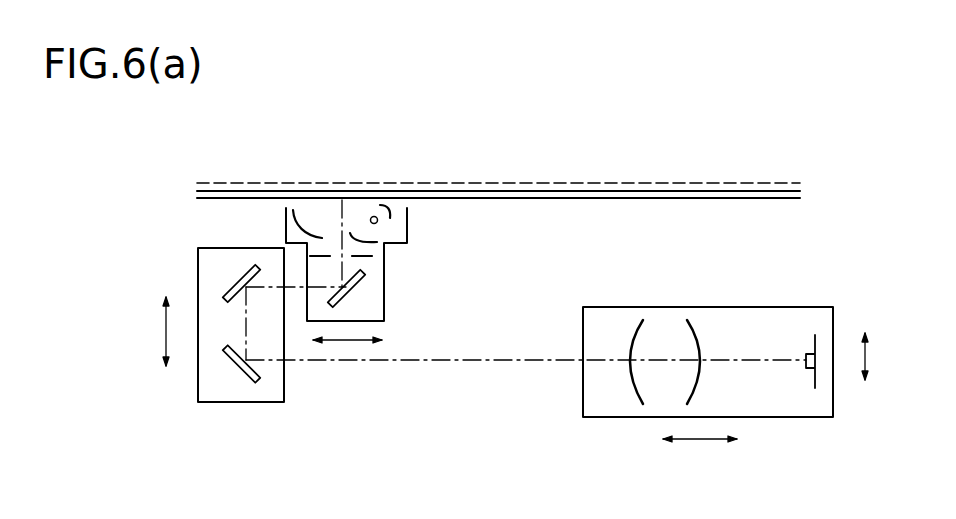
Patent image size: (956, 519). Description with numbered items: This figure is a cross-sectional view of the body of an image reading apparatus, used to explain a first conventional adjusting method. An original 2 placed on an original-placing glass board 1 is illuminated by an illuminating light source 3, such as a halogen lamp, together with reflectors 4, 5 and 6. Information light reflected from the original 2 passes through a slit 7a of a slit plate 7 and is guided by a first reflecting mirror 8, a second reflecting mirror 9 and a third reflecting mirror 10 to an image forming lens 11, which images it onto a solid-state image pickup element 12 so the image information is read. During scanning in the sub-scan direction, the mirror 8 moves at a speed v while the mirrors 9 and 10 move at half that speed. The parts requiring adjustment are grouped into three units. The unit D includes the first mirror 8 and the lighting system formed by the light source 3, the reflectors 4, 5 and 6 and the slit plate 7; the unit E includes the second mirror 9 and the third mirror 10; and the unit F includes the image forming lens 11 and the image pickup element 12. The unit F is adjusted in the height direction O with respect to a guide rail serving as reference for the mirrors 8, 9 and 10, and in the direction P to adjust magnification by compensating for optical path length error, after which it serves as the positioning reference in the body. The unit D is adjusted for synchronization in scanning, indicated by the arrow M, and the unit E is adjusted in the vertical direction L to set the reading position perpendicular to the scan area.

The original-placing glass board 1 is at (551, 191).
The original 2 is at (647, 183).
The illuminating light source 3 is at (378, 222).
The reflector 4 is at (386, 207).
The reflector 5 is at (360, 236).
The reflector 6 is at (303, 228).
The slit plate 7 is at (367, 258).
The slit 7a is at (337, 258).
The first reflecting mirror 8 is at (351, 292).
The second reflecting mirror 9 is at (244, 273).
The third reflecting mirror 10 is at (227, 357).
The image forming lens 11 is at (635, 392).
The solid-state image pickup element 12 is at (807, 356).
The unit D is at (384, 292).
The unit E is at (238, 402).
The unit F is at (725, 307).
The vertical direction L is at (165, 333).
The movement direction of optical head M is at (358, 343).
The height direction O is at (862, 353).
The magnification adjusting direction P is at (697, 439).